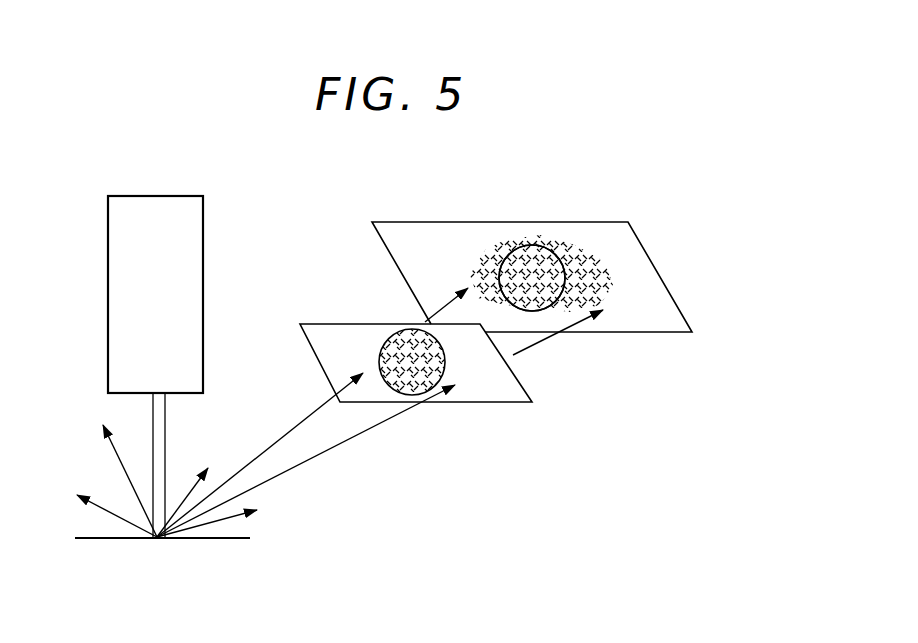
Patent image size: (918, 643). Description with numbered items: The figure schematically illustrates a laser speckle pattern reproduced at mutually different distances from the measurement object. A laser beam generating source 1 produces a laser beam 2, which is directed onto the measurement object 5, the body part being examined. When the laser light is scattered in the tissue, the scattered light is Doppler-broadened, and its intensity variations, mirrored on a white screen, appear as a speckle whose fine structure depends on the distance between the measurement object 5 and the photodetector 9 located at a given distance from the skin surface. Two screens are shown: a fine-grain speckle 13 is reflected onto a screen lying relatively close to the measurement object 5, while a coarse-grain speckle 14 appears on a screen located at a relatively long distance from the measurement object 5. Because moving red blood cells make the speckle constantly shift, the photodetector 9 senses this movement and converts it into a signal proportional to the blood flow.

The laser beam generating source 1 is at (108, 284).
The laser beam 2 is at (167, 455).
The measurement object 5 is at (228, 542).
The photodetector 9 is at (390, 345).
The fine-grain speckle 13 is at (523, 393).
The coarse-grain speckle 14 is at (672, 308).